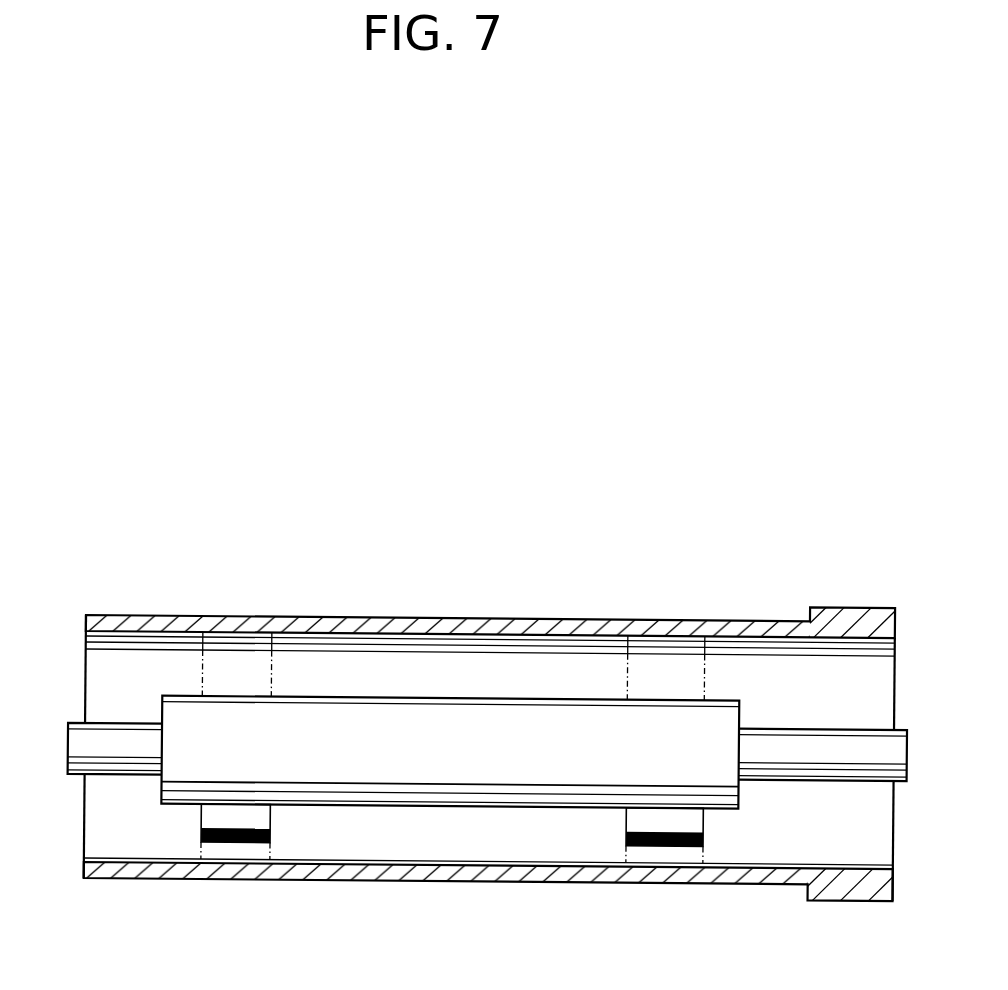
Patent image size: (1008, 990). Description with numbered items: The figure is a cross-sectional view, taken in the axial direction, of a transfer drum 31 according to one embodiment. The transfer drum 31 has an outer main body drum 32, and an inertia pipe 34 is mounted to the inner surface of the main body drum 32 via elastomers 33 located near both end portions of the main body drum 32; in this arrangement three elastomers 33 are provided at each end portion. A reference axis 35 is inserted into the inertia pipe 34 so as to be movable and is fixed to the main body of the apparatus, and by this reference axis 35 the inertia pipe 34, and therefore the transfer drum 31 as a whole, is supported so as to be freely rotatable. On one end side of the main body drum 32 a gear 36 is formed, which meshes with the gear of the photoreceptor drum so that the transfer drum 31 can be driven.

The transfer drum 31 is at (128, 503).
The main body drum 32 is at (412, 883).
The elastomers 33 is at (243, 660).
The inertia pipe 34 is at (710, 782).
The reference axis 35 is at (802, 743).
The gear 36 is at (847, 622).